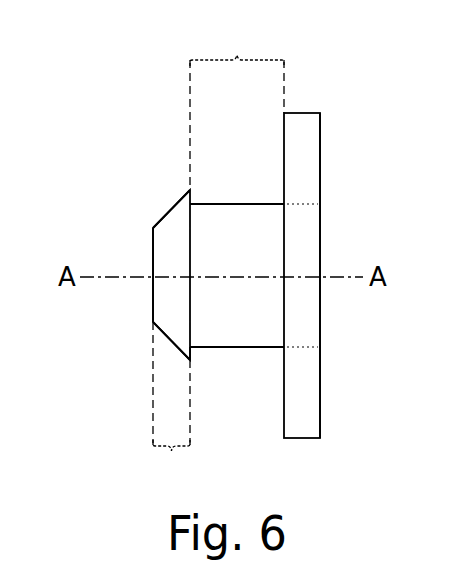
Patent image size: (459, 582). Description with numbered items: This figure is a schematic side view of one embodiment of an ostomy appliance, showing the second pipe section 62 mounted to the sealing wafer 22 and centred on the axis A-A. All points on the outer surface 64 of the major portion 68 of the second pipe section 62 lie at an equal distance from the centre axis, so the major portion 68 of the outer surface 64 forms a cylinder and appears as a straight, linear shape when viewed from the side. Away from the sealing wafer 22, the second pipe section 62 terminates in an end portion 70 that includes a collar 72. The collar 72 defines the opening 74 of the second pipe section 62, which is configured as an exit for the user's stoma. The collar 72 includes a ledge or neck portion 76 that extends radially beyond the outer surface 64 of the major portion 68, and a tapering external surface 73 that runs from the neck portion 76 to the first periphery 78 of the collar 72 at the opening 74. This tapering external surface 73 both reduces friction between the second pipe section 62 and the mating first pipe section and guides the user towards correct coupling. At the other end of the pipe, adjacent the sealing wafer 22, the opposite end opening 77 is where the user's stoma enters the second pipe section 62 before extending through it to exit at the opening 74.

The sealing wafer 22 is at (302, 113).
The second pipe section 62 is at (230, 203).
The outer surface 64 is at (273, 203).
The major portion 68 is at (237, 106).
The end portion 70 is at (171, 402).
The collar 72 is at (164, 232).
The tapering external surface 73 is at (189, 190).
The opening 74 is at (152, 230).
The neck portion 76 is at (192, 354).
The opposite end opening 77 is at (322, 215).
The first periphery 78 is at (152, 319).